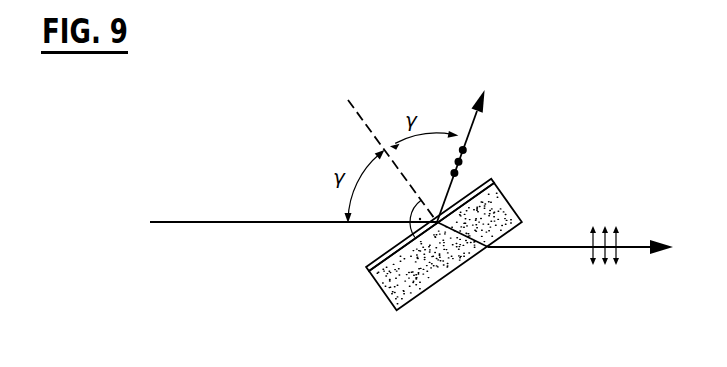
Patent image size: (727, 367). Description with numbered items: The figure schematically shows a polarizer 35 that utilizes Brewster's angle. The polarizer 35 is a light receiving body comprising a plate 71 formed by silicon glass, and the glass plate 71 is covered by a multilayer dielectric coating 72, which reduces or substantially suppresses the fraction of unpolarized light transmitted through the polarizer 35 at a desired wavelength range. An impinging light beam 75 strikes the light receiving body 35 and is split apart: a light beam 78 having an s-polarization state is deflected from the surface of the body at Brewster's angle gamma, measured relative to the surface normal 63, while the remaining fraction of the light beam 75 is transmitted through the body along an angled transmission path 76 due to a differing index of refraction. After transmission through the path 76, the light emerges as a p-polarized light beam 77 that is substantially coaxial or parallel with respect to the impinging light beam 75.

The polarizer 35 is at (580, 112).
The surface normal 63 is at (354, 112).
The plate 71 is at (423, 287).
The multilayer dielectric coating 72 is at (382, 262).
The light beam 75 is at (275, 220).
The angled transmission path 76 is at (524, 203).
The light beam 77 is at (580, 284).
The light beam 78 is at (491, 156).